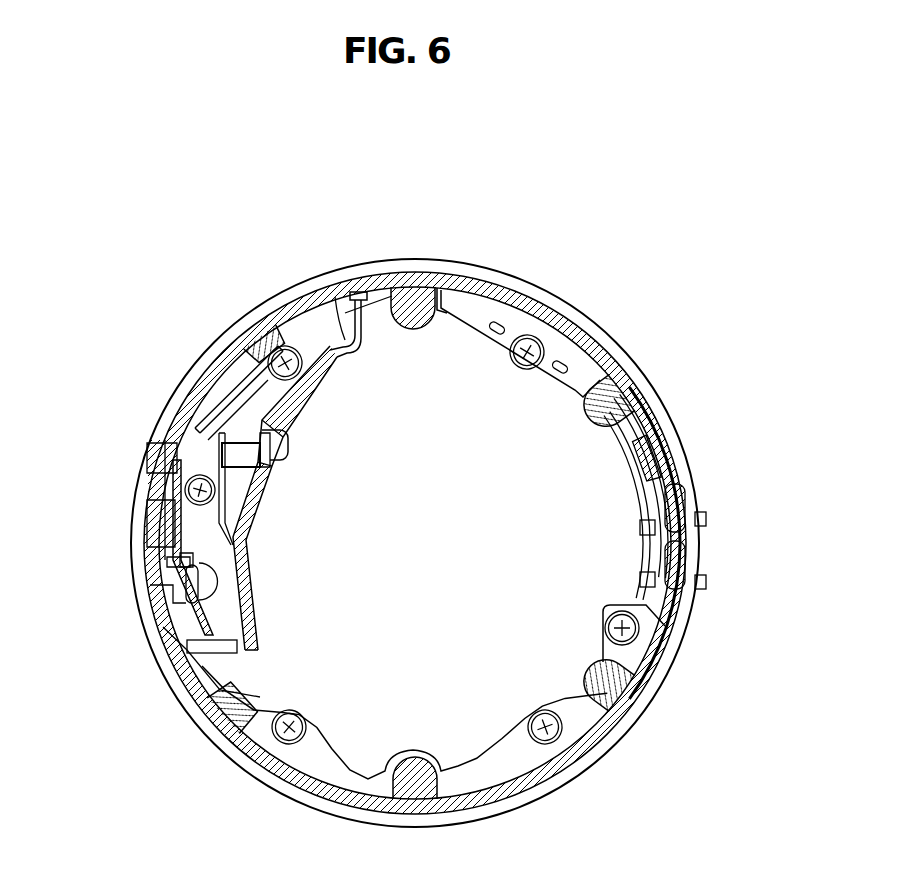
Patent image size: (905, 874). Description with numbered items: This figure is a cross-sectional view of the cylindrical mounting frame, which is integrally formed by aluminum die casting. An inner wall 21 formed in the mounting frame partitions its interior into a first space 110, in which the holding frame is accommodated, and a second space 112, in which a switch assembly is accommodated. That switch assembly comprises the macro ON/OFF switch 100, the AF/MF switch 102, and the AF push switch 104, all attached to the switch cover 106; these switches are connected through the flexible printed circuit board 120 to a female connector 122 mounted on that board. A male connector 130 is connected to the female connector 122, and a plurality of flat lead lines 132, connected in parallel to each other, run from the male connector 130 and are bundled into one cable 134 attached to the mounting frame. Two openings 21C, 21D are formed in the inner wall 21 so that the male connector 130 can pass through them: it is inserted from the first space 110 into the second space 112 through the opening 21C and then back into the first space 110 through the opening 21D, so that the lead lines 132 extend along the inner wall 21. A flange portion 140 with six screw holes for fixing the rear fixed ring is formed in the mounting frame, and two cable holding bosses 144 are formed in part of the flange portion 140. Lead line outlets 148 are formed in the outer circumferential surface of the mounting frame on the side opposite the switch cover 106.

The inner wall 21 is at (258, 500).
The opening 21C is at (320, 352).
The opening 21D is at (273, 423).
The macro ON/OFF switch 100 is at (230, 363).
The AF/MF switch 102 is at (167, 470).
The AF push switch 104 is at (163, 610).
The switch cover 106 is at (280, 305).
The first space 110 is at (565, 493).
The second space 112 is at (230, 422).
The flexible printed circuit board 120 is at (222, 513).
The female connector 122 is at (187, 493).
The male connector 130 is at (277, 480).
The lead lines 132 is at (277, 450).
The cable 134 is at (447, 300).
The flange portion 140 is at (490, 342).
The cable holding bosses 144 is at (552, 370).
The lead line outlets 148 is at (710, 568).